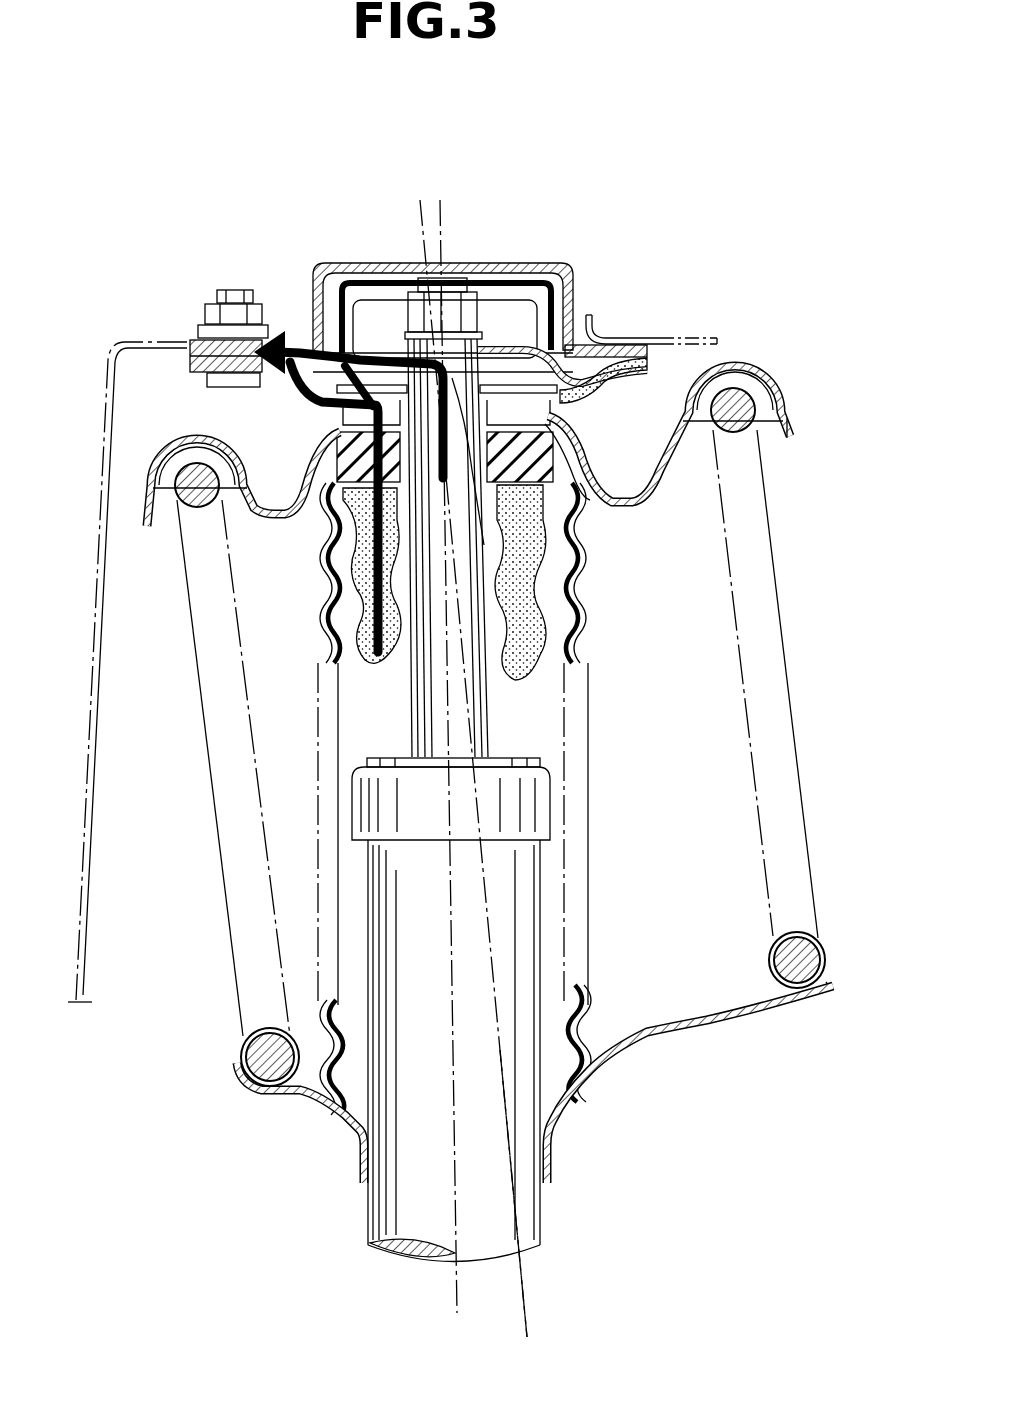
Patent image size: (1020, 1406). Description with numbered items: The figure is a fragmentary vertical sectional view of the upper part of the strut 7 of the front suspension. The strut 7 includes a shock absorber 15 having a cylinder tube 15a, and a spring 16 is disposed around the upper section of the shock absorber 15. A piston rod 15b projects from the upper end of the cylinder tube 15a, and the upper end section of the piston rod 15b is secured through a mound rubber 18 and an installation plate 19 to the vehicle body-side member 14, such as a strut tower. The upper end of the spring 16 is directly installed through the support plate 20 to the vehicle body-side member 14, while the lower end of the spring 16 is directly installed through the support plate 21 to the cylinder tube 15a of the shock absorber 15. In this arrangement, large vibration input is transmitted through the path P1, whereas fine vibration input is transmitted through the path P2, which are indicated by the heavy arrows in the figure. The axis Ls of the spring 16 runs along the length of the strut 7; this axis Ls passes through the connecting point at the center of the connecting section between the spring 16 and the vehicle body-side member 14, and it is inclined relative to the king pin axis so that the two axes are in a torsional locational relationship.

The vehicle body-side member 14 is at (163, 340).
The mound rubber 18 is at (566, 262).
The installation plate 19 is at (590, 300).
The path P2 is at (470, 478).
The path P1 is at (357, 607).
The piston rod 15b is at (500, 725).
The shock absorber 15 is at (565, 802).
The cylinder tube 15a is at (540, 880).
The support plate 20 is at (650, 507).
The spring 16 is at (790, 700).
The strut 7 is at (835, 840).
The support plate 21 is at (707, 1025).
The axis of the spring Ls is at (523, 1317).